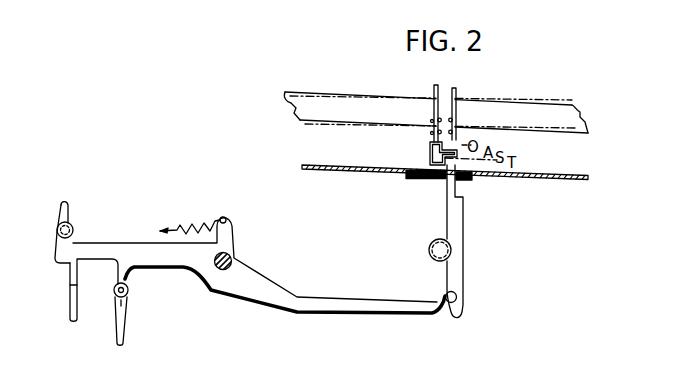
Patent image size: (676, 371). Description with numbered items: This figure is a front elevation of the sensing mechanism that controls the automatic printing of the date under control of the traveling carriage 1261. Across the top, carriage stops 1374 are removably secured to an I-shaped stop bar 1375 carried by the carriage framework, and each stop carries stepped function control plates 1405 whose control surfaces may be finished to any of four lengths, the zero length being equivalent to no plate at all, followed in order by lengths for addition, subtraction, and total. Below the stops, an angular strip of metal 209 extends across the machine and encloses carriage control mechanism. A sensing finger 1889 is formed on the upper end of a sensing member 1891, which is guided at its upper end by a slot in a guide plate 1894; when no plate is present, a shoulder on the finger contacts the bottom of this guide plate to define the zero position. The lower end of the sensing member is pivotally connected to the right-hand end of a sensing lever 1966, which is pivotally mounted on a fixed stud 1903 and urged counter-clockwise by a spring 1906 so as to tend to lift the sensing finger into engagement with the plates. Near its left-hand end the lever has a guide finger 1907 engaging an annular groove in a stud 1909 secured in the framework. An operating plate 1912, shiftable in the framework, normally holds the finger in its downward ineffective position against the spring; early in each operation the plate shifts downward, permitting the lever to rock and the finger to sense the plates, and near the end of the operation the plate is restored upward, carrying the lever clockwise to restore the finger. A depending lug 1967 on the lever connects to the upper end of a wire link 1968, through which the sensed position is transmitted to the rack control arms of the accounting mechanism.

The traveling carriage 1261 is at (308, 85).
The carriage stops 1374 is at (448, 88).
The I-shaped stop bar 1375 is at (497, 103).
The function control plates 1405 is at (431, 160).
The angular strip of metal 209 is at (517, 172).
The guide plate 1894 is at (462, 181).
The sensing finger 1889 is at (450, 195).
The sensing member 1891 is at (446, 280).
The sensing lever 1966 is at (326, 305).
The fixed stud 1903 is at (231, 261).
The spring 1906 is at (211, 191).
The guide finger 1907 is at (64, 205).
The stud 1909 is at (74, 228).
The operating plate 1912 is at (70, 298).
The depending lug 1967 is at (128, 284).
The wire link 1968 is at (125, 340).